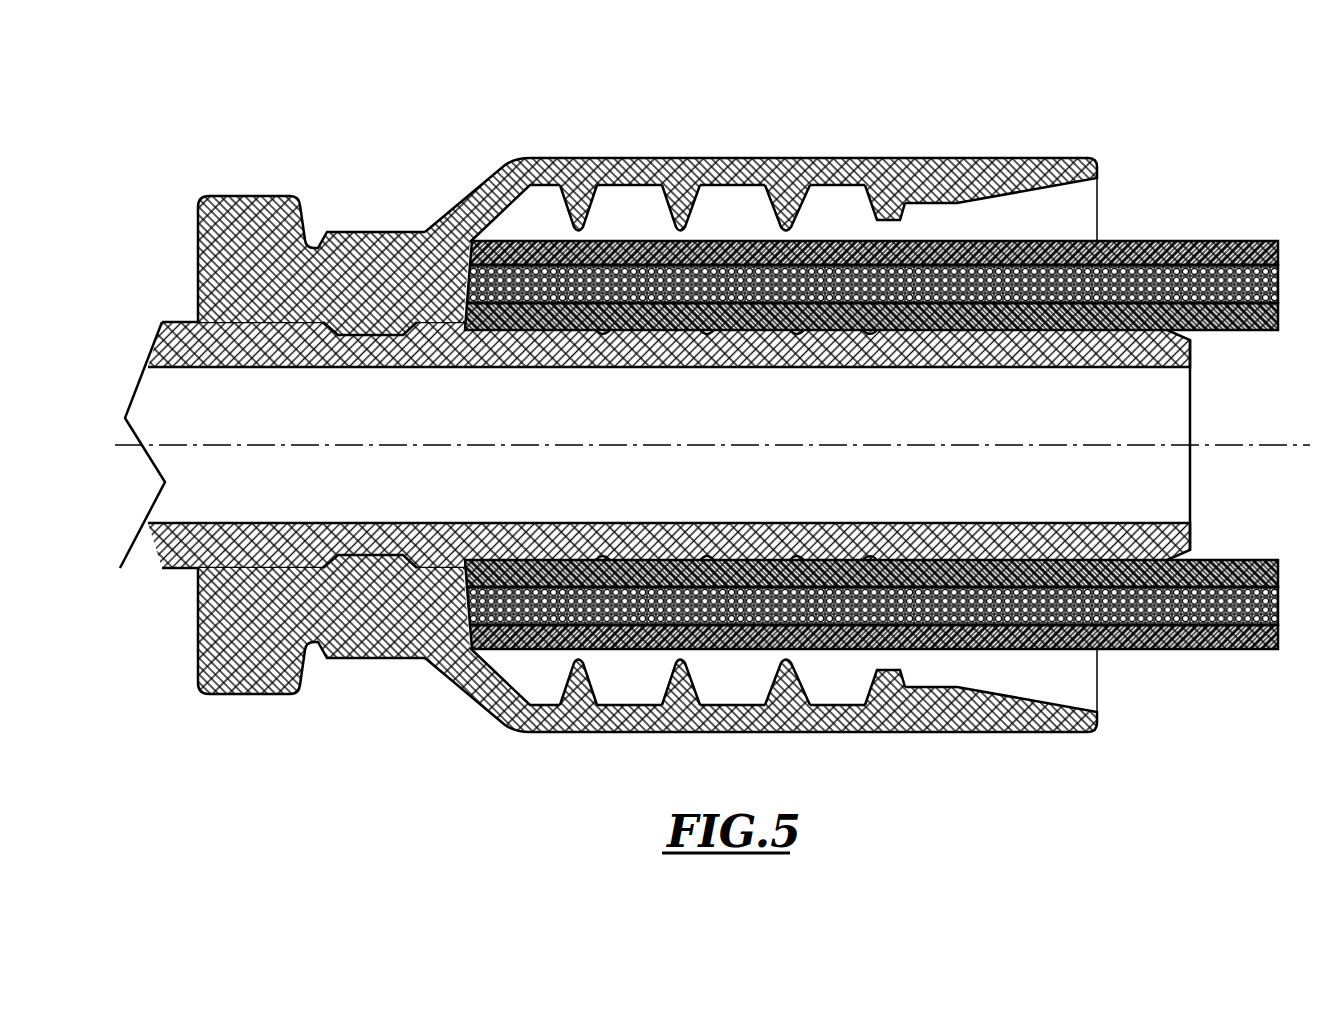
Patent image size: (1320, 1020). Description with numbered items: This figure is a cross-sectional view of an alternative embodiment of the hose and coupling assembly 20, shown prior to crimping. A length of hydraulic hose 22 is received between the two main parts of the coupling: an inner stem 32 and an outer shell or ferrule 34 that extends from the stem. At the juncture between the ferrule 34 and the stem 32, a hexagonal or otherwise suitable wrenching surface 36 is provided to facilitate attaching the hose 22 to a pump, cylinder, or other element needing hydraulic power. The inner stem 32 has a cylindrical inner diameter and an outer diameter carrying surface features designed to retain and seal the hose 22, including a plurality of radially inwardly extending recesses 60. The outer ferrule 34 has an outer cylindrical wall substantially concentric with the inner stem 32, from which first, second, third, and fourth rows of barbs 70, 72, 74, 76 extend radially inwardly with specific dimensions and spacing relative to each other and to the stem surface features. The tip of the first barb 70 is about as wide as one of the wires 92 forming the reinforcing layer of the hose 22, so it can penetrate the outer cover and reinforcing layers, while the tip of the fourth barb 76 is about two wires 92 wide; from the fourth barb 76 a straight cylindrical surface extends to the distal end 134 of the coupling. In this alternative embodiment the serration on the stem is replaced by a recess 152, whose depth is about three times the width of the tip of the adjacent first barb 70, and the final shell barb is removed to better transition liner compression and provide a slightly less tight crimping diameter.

The hose and coupling assembly 20 is at (938, 103).
The hydraulic hose 22 is at (1203, 236).
The inner stem 32 is at (175, 327).
The outer ferrule 34 is at (477, 182).
The wrenching surface 36 is at (362, 230).
The radially inwardly extending recesses 60 is at (707, 333).
The first row of barbs 70 is at (578, 205).
The second row of barbs 72 is at (683, 205).
The third row of barbs 74 is at (788, 205).
The fourth barb 76 is at (885, 205).
The wires 92 is at (1280, 292).
The distal end 134 is at (1100, 164).
The recess 152 is at (602, 331).